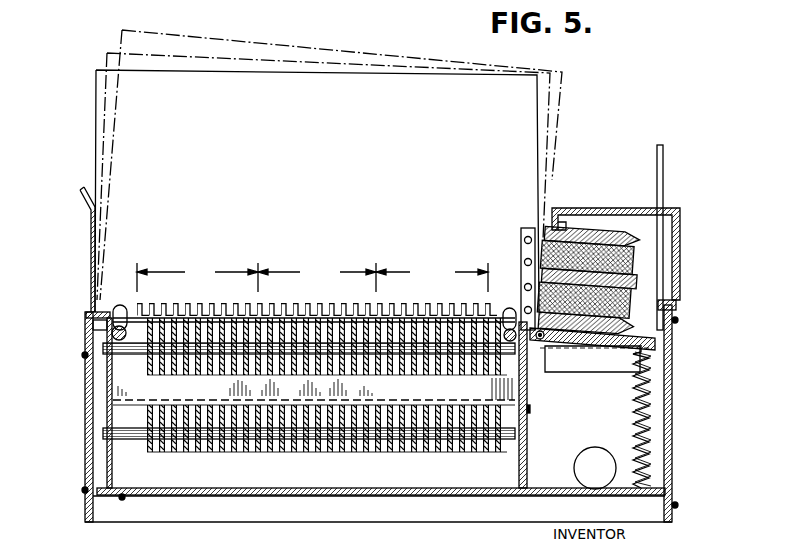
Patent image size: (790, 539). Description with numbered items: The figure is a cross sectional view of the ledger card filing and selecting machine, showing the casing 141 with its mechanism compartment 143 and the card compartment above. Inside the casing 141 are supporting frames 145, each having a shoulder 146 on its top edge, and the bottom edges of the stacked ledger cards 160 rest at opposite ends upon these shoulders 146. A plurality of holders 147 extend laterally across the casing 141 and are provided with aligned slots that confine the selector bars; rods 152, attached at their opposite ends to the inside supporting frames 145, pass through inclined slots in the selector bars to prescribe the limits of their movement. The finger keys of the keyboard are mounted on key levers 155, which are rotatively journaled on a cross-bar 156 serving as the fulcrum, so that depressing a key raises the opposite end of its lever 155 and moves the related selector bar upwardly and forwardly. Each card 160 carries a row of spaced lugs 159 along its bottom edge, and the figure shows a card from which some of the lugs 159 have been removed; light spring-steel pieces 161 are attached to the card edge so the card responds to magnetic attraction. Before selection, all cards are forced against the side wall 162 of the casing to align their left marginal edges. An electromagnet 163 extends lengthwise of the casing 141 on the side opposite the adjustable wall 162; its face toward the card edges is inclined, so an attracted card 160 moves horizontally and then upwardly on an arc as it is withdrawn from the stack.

The casing 141 is at (357, 497).
The mechanism compartment 143 is at (380, 411).
The supporting frames 145 is at (107, 413).
The shoulder 146 is at (103, 314).
The holders 147 is at (520, 397).
The rods 152 is at (140, 345).
The key levers 155 is at (330, 452).
The cross-bar 156 is at (512, 448).
The lugs 159 is at (322, 306).
The ledger cards 160 is at (418, 82).
The spring-steel pieces 161 is at (524, 252).
The side wall 162 is at (91, 258).
The electromagnet 163 is at (583, 265).